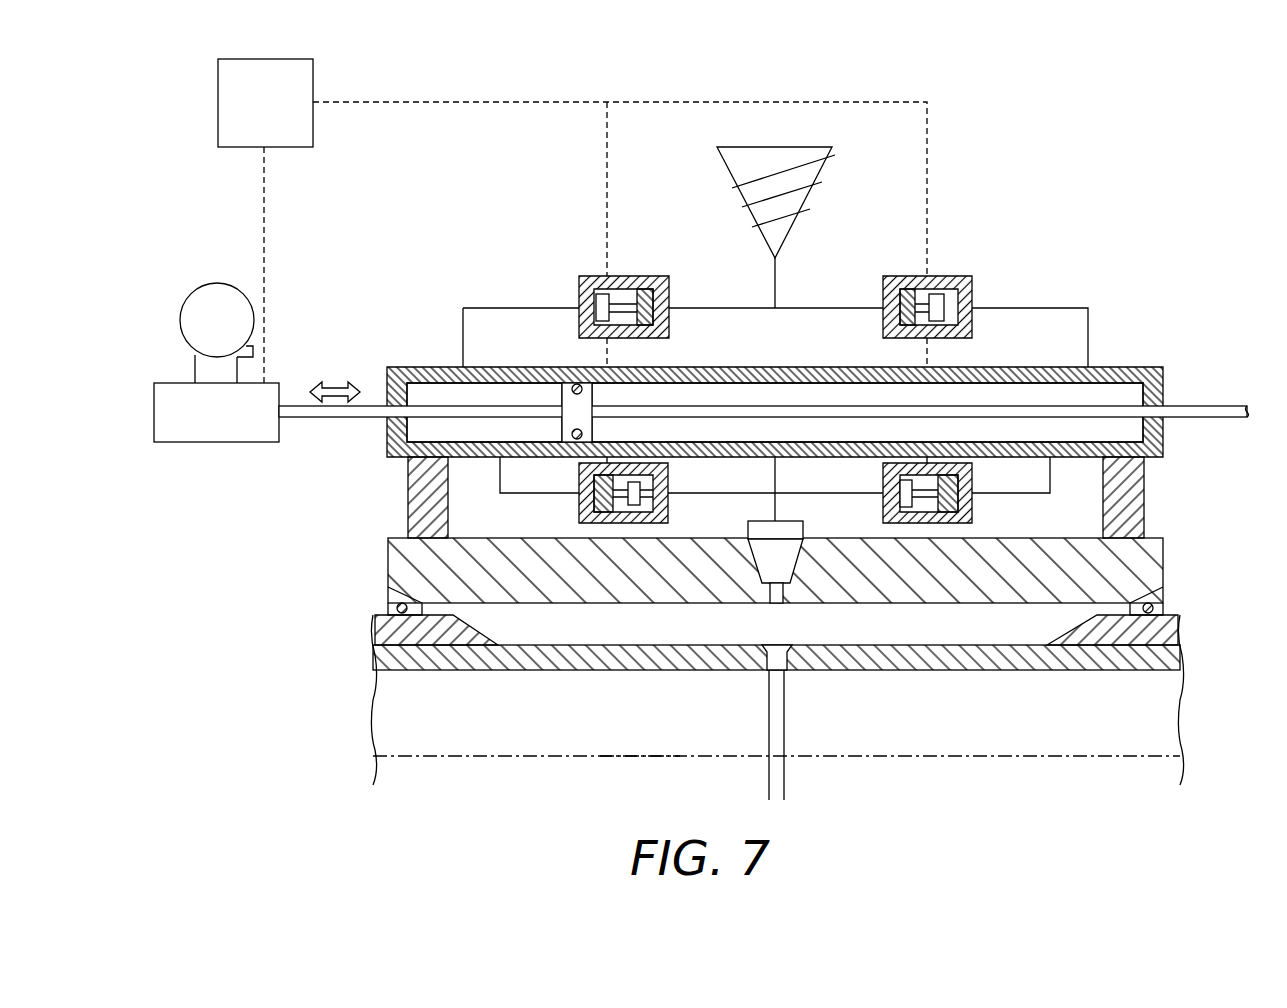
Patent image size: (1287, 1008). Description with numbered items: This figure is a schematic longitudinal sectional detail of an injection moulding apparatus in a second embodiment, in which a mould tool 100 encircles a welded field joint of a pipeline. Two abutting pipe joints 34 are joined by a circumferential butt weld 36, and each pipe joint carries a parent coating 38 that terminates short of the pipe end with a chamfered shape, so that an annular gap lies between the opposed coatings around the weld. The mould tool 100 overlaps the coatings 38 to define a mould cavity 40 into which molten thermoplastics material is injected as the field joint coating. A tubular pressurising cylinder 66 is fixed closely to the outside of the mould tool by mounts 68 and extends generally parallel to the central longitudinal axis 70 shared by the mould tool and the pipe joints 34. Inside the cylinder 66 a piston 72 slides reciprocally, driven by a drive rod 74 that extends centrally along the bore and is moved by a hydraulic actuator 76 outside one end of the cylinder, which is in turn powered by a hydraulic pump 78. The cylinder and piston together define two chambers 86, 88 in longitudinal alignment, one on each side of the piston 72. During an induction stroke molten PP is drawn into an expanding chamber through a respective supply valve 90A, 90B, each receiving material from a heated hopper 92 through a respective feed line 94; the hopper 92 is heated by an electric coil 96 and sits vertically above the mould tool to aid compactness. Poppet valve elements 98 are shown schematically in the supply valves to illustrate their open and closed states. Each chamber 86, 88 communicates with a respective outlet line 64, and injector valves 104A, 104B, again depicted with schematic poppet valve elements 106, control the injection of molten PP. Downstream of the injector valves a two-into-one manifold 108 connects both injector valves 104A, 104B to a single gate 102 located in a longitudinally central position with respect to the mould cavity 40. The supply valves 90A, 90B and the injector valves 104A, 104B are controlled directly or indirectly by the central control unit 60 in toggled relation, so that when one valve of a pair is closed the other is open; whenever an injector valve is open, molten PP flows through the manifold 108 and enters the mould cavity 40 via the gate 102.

The pipe joints 34 is at (506, 758).
The circumferential butt weld 36 is at (784, 721).
The parent coating 38 is at (382, 632).
The mould cavity 40 is at (692, 652).
The central control unit 60 is at (572, 261).
The outlet lines 64 is at (509, 476).
The pressurising cylinder 66 is at (837, 367).
The mounts 68 is at (412, 497).
The central longitudinal axis 70 is at (640, 760).
The piston 72 is at (562, 396).
The drive rod 74 is at (302, 443).
The hydraulic actuator 76 is at (257, 412).
The hydraulic pump 78 is at (217, 333).
The first chamber 86 is at (434, 381).
The second chamber 88 is at (1050, 382).
The supply valve 90A is at (579, 290).
The supply valve 90B is at (972, 289).
The heated hopper 92 is at (722, 164).
The feed lines 94 is at (737, 307).
The electric coil 96 is at (832, 158).
The poppet valve elements 98 is at (595, 278).
The mould tool 100 is at (398, 551).
The gate 102 is at (778, 603).
The injector valve 104A is at (579, 516).
The injector valve 104B is at (972, 516).
The poppet valve elements 106 is at (651, 488).
The two-into-one manifold 108 is at (728, 495).